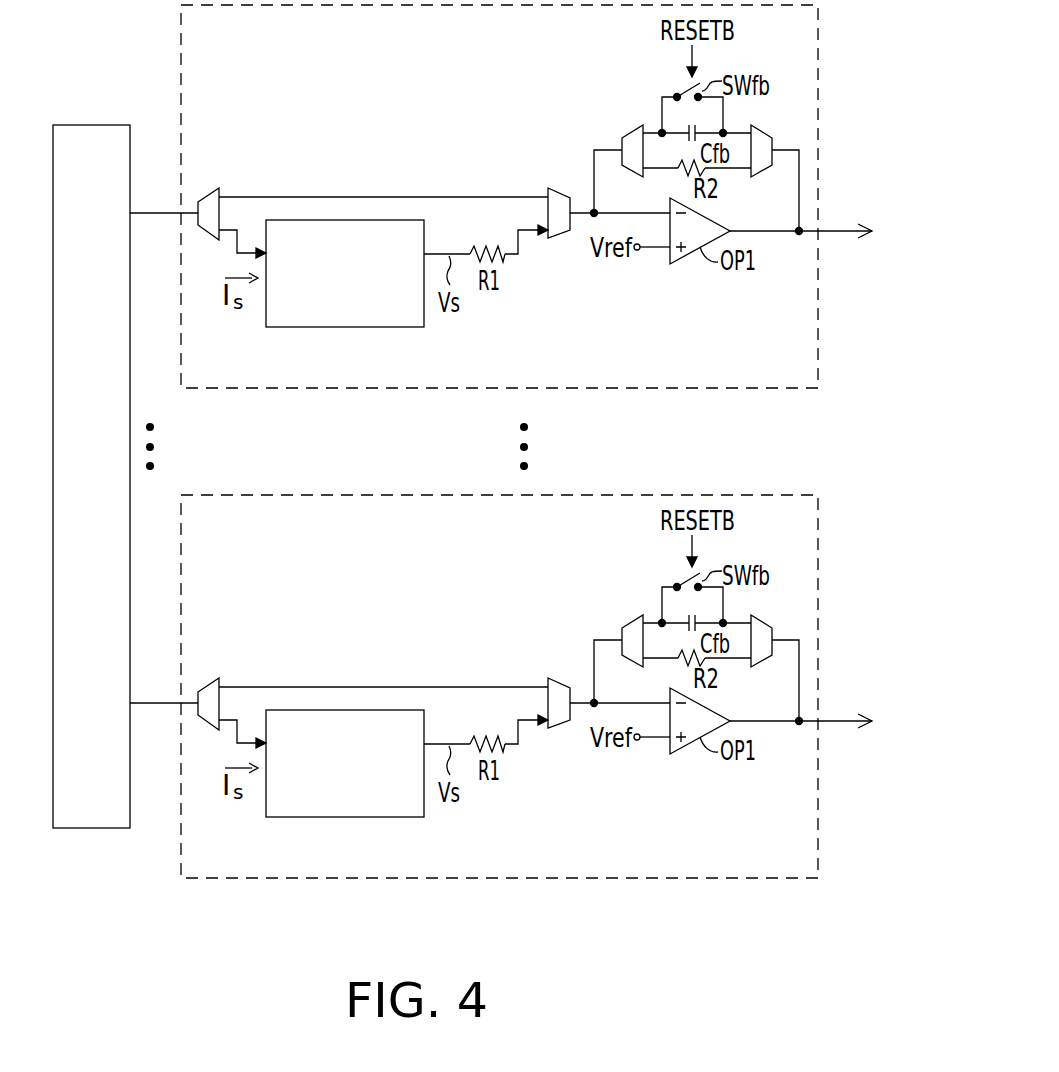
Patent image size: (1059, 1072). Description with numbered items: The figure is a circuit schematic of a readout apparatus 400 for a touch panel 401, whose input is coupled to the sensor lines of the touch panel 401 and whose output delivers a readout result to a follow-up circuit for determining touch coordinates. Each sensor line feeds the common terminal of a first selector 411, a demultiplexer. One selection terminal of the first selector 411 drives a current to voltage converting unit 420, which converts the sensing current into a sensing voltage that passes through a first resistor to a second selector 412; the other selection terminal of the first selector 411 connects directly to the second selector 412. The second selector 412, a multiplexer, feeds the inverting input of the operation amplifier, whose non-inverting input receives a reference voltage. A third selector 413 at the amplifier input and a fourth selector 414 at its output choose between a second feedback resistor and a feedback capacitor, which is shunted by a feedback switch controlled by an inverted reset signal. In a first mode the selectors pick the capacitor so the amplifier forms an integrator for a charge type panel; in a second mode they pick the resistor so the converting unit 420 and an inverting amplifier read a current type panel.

The readout apparatus 400 is at (820, 122).
The touch panel 401 is at (86, 829).
The first selector 411 is at (203, 187).
The second selector 412 is at (553, 187).
The third selector 413 is at (632, 127).
The fourth selector 414 is at (762, 124).
The current to voltage converting unit 420 is at (335, 328).